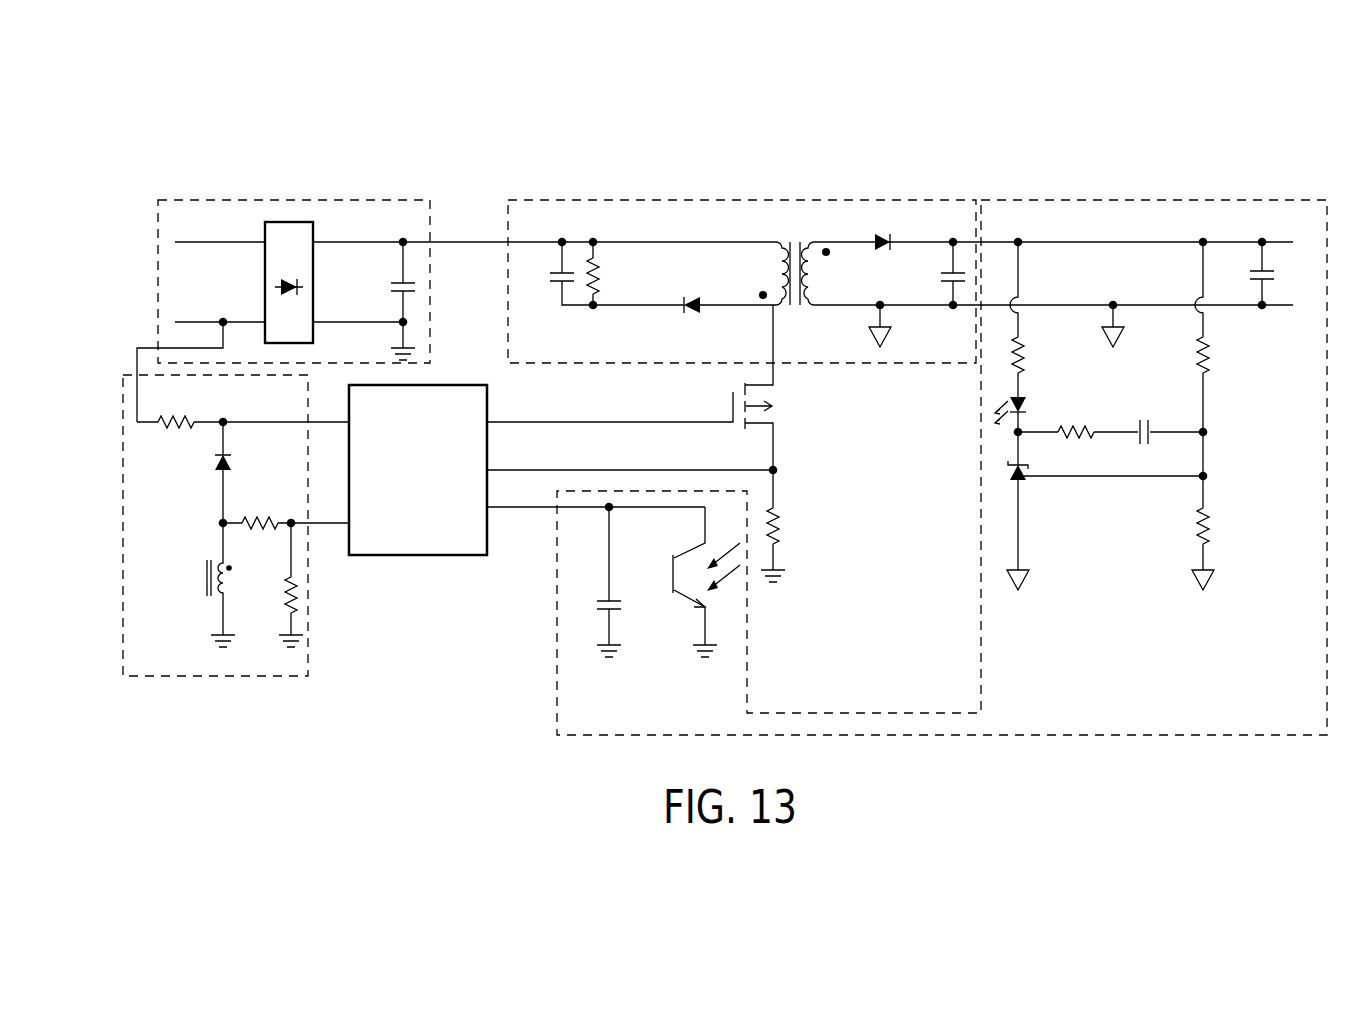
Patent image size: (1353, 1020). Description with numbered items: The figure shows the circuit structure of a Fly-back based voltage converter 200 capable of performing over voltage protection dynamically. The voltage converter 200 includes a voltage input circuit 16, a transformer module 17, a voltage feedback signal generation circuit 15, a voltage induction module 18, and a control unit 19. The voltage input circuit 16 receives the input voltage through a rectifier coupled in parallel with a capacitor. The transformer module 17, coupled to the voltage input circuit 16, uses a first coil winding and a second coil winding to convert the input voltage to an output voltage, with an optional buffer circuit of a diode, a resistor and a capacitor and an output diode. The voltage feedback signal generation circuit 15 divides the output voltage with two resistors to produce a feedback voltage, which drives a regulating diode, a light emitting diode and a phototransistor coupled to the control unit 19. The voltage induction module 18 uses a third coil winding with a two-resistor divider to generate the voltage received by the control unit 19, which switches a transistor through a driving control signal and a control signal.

The voltage converter 200 is at (230, 104).
The voltage feedback signal generation circuit 15 is at (1100, 198).
The voltage input circuit 16 is at (225, 198).
The transformer module 17 is at (650, 198).
The voltage induction module 18 is at (223, 678).
The control unit 19 is at (425, 557).